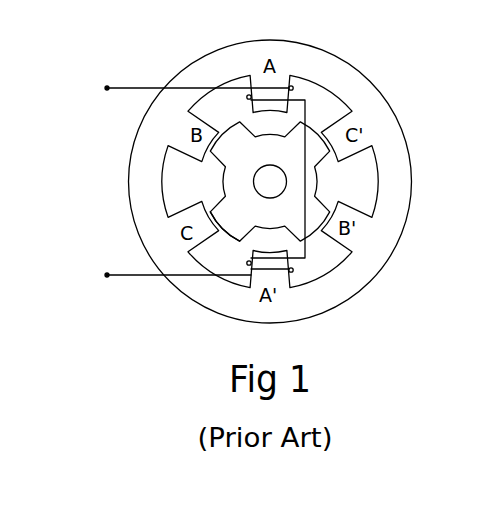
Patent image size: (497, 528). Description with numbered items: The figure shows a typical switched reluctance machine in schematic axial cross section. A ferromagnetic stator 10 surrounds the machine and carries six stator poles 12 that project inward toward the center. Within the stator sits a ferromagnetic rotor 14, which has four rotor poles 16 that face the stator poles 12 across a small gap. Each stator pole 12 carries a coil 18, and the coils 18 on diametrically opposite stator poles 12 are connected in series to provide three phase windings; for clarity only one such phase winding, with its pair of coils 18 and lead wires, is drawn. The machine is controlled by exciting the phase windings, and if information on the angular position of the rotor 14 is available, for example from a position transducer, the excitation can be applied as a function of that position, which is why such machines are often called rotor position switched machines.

The stator 10 is at (348, 82).
The stator poles 12 is at (343, 152).
The rotor 14 is at (228, 182).
The rotor poles 16 is at (222, 211).
The coil 18 is at (291, 86).